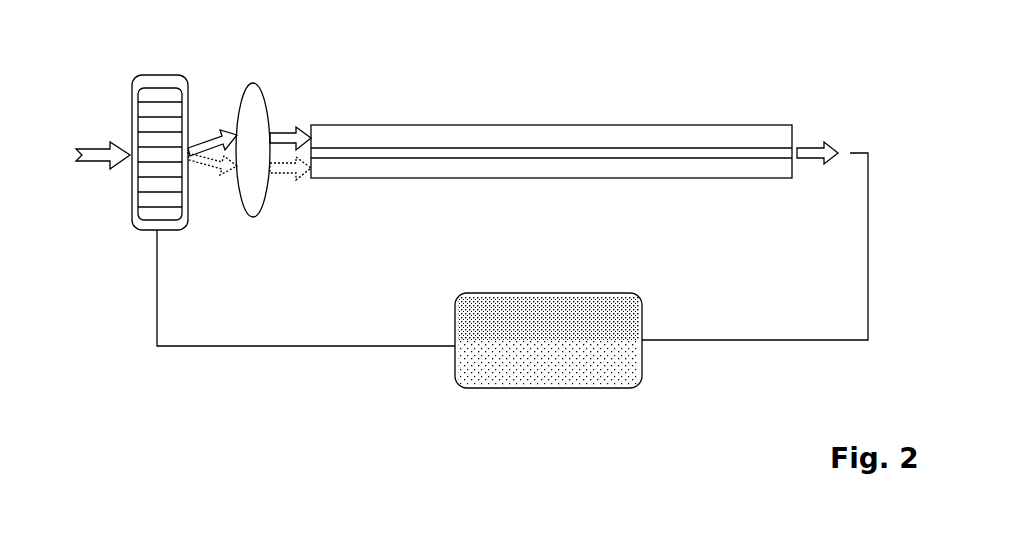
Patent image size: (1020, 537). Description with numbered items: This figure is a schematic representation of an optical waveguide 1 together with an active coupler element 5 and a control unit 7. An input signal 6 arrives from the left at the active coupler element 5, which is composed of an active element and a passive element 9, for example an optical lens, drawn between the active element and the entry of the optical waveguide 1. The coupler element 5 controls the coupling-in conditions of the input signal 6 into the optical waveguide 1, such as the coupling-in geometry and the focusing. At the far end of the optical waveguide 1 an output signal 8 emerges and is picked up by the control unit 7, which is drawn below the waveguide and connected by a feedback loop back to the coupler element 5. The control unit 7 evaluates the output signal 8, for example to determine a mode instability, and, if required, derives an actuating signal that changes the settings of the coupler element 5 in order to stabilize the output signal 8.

The optical waveguide 1 is at (562, 127).
The active coupler element 5 is at (160, 72).
The input signal 6 is at (96, 177).
The control unit 7 is at (551, 291).
The output signal 8 is at (817, 140).
The passive element 9 is at (253, 229).